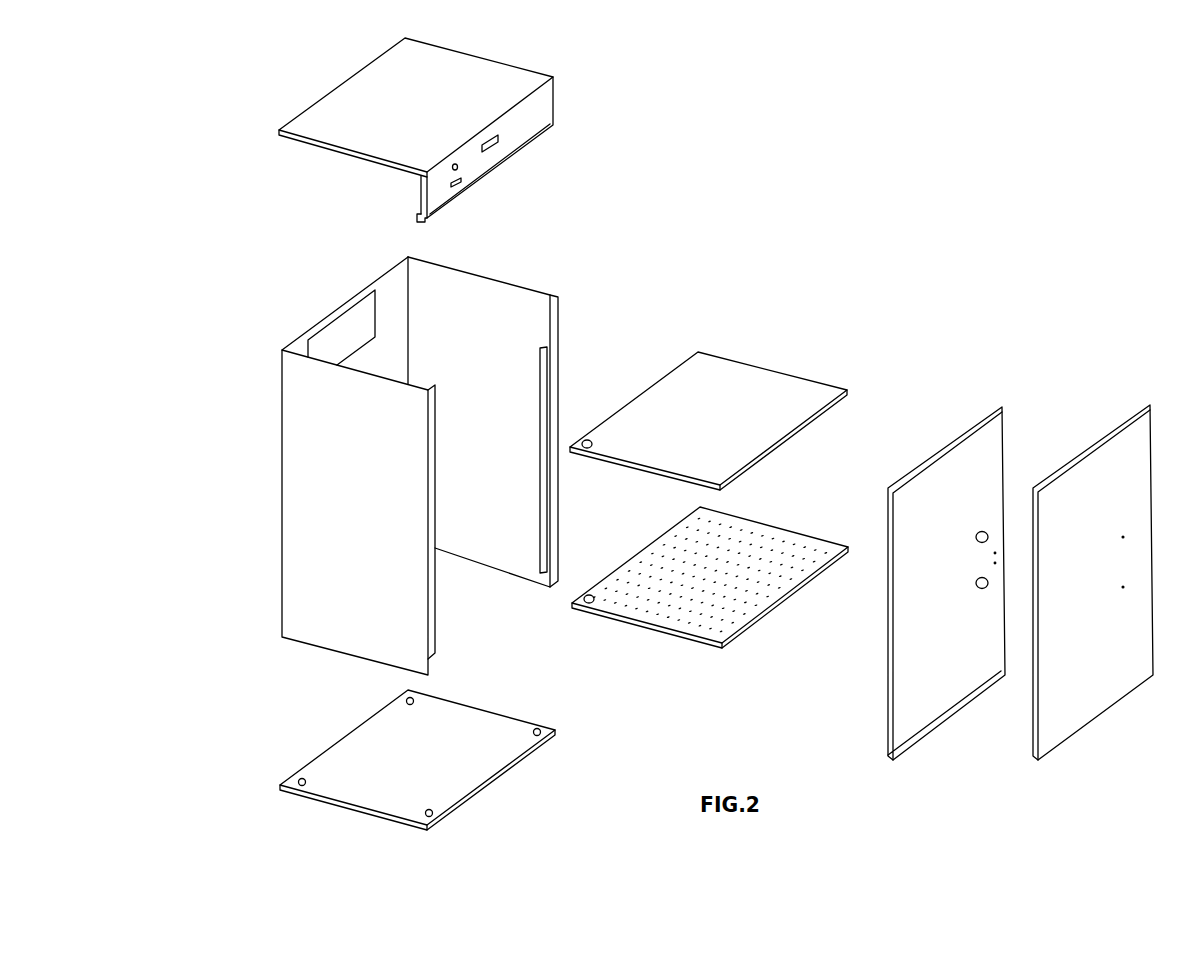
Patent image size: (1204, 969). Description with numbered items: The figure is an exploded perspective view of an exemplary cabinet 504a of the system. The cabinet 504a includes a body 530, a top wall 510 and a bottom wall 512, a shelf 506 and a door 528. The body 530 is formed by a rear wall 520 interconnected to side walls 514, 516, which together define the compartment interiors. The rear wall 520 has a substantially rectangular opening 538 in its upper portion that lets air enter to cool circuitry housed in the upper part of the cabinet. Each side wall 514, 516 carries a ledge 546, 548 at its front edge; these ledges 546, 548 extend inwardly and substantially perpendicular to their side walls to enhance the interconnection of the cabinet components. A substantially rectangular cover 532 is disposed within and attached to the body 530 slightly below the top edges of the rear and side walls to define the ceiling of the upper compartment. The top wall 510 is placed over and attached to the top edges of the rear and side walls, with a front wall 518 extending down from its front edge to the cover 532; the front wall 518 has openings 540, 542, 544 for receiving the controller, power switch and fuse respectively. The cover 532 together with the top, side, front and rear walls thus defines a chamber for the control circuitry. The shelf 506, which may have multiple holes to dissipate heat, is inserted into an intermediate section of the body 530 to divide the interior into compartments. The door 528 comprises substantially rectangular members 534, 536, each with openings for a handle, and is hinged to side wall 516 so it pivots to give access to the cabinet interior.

The cabinet 504a is at (690, 232).
The top wall 510 is at (503, 67).
The opening 540 is at (507, 137).
The opening 542 is at (465, 163).
The opening 544 is at (453, 192).
The front wall 518 is at (552, 110).
The body 530 is at (270, 487).
The side wall 516 is at (288, 580).
The ledge 548 is at (435, 393).
The rear wall 520 is at (393, 263).
The opening 538 is at (325, 333).
The side wall 514 is at (519, 292).
The ledge 546 is at (553, 322).
The cover 532 is at (710, 353).
The shelf 506 is at (632, 622).
The bottom wall 512 is at (370, 808).
The door 528 is at (1163, 403).
The rectangular member 536 is at (967, 447).
The rectangular member 534 is at (1152, 515).